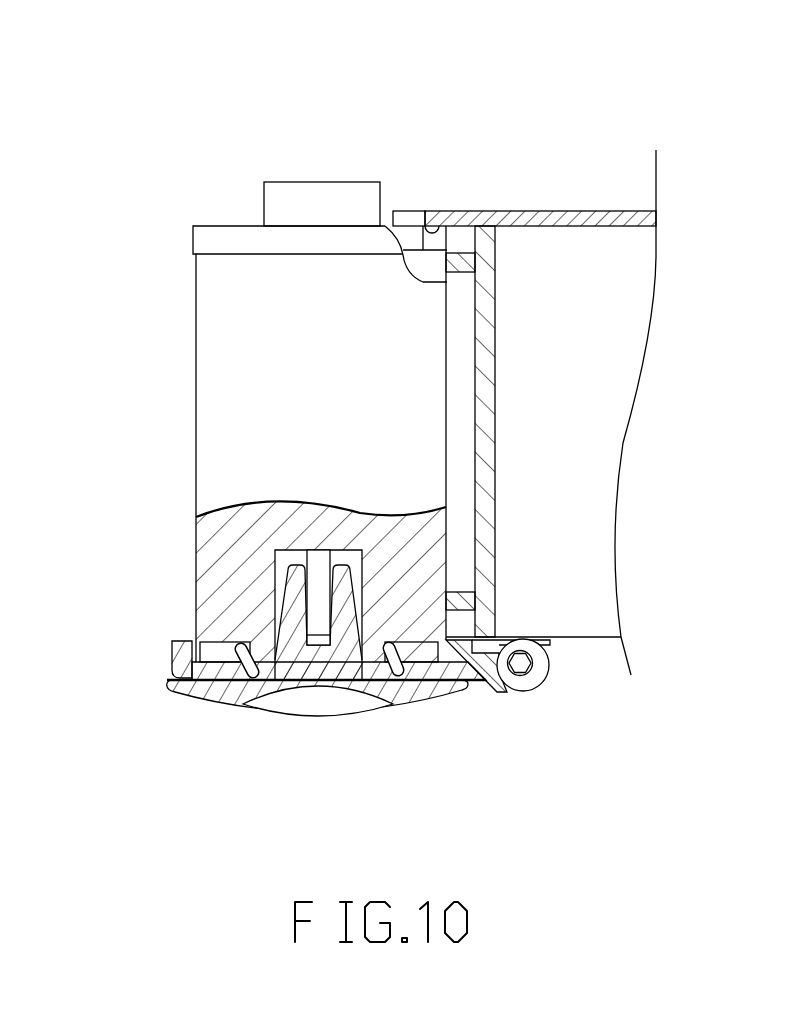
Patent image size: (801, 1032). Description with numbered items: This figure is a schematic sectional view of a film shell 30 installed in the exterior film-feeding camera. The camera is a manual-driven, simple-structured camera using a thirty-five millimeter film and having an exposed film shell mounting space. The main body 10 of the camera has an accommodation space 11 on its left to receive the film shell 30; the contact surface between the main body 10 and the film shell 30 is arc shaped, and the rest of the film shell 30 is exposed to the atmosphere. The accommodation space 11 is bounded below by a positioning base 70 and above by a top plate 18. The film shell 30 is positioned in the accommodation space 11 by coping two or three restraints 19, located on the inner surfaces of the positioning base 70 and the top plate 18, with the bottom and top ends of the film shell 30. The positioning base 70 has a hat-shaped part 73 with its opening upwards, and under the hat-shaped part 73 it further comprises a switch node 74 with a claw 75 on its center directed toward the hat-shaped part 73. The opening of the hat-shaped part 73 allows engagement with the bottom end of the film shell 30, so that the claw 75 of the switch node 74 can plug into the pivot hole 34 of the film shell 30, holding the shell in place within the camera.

The main body 10 is at (537, 203).
The accommodation space 11 is at (457, 443).
The top plate 18 is at (408, 213).
The restraints 19 is at (424, 238).
The film shell 30 is at (218, 340).
The pivot hole 34 is at (222, 510).
The positioning base 70 is at (485, 718).
The hat-shaped part 73 is at (213, 685).
The switch node 74 is at (410, 707).
The claw 75 is at (290, 600).